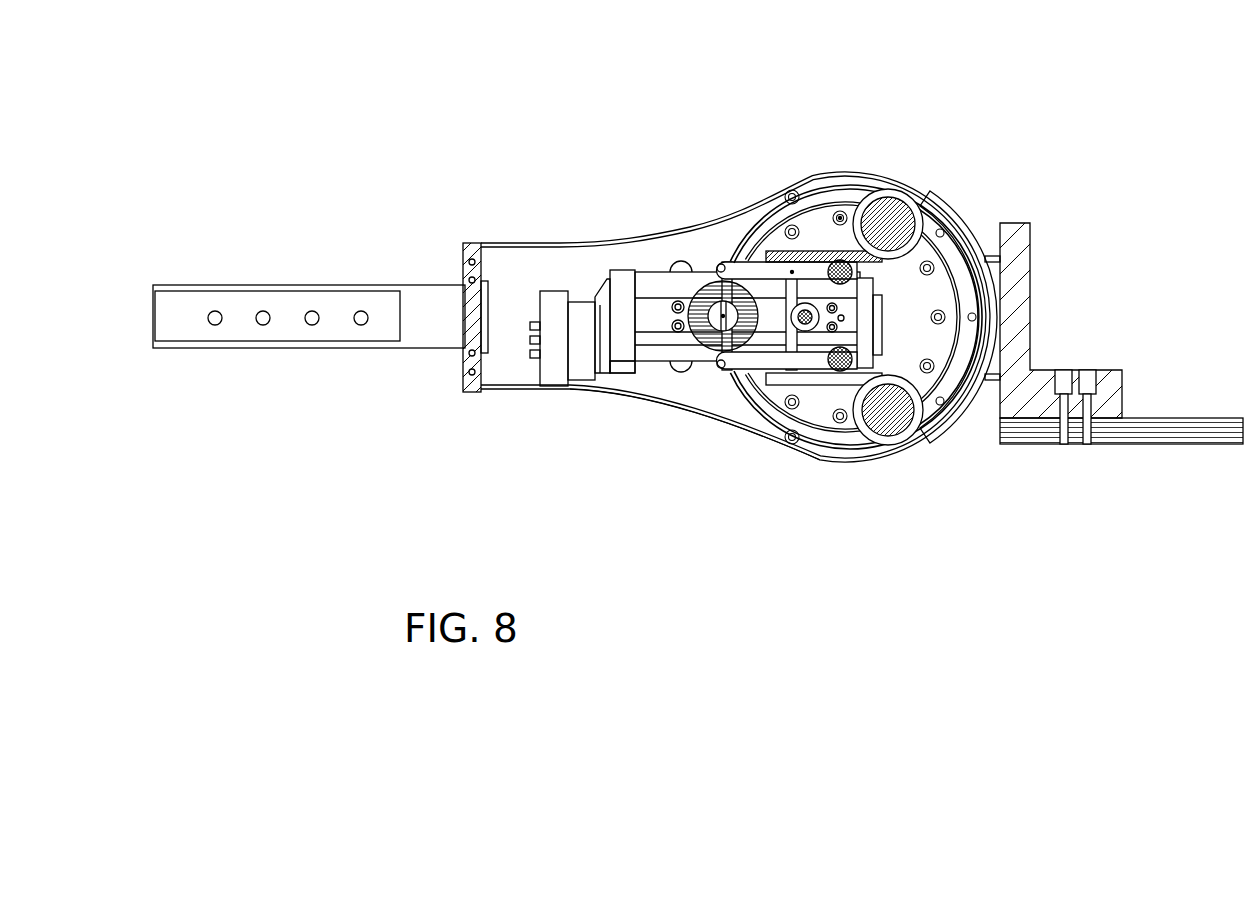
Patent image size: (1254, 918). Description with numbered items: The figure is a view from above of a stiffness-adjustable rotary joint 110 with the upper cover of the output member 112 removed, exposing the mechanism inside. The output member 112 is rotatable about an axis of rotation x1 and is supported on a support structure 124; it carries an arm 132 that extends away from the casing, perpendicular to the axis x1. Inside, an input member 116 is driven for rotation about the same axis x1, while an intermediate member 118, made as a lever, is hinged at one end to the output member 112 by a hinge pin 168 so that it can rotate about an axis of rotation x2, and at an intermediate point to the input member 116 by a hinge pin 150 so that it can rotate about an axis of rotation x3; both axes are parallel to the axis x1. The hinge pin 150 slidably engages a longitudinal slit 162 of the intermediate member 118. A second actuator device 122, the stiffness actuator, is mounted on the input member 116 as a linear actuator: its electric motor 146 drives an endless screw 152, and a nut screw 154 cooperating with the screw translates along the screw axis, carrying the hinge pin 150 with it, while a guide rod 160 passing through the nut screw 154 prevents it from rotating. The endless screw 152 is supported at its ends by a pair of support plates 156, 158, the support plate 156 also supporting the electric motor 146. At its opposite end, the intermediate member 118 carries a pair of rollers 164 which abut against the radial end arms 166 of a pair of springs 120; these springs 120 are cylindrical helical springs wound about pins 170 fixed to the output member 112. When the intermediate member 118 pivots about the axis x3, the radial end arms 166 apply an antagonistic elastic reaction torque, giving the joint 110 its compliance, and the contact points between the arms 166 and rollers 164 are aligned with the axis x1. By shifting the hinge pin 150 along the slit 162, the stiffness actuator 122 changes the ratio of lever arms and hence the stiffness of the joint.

The stiffness-adjustable rotary joint 110 is at (602, 200).
The output member 112 is at (485, 402).
The input member 116 is at (651, 378).
The intermediate member 118 is at (741, 388).
The springs 120 is at (905, 212).
The second actuator device 122 is at (578, 282).
The support structure 124 is at (1041, 440).
The arm 132 is at (296, 350).
The electric motor 146 is at (577, 388).
The hinge pin 150 is at (822, 375).
The endless screw 152 is at (690, 370).
The nut screw 154 is at (782, 372).
The support plate 156 is at (912, 325).
The support plate 158 is at (626, 374).
The guide rod 160 is at (654, 270).
The longitudinal slit 162 is at (739, 262).
The rollers 164 is at (918, 272).
The radial end arms 166 is at (815, 250).
The hinge pin 168 is at (697, 262).
The pins 170 is at (936, 203).
The axis of rotation x1 is at (832, 205).
The axis of rotation x2 is at (731, 262).
The axis of rotation x3 is at (792, 262).